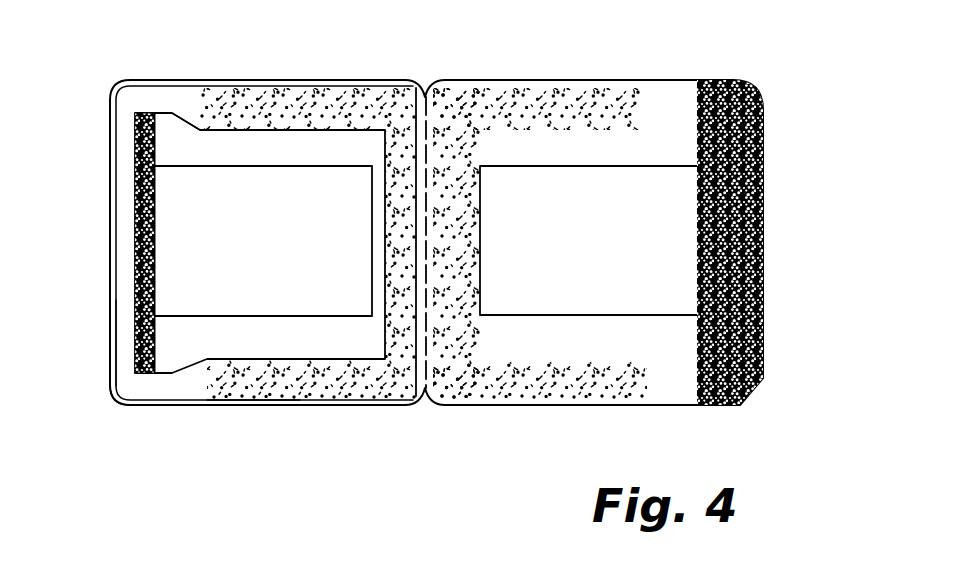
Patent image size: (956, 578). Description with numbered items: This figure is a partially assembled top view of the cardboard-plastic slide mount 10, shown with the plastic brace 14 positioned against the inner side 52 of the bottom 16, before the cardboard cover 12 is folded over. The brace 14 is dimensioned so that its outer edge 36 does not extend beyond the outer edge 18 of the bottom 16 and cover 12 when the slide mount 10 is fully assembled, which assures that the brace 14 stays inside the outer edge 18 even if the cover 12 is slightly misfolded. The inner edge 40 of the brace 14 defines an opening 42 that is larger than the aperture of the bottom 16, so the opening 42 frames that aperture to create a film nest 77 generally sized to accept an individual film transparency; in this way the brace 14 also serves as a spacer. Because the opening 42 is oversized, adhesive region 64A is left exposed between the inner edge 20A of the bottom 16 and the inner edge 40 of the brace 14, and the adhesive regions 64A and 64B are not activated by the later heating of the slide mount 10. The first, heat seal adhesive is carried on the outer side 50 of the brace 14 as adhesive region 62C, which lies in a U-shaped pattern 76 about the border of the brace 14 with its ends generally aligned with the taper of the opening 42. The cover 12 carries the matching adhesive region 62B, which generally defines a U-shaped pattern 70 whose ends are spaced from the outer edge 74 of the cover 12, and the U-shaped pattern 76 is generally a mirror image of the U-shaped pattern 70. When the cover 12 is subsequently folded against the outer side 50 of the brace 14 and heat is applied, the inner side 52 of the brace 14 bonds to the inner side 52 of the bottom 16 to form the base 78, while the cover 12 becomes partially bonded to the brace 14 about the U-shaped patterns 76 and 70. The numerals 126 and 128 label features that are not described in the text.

The slide mount 10 is at (790, 139).
The cover 12 is at (543, 80).
The brace 14 is at (117, 338).
The bottom 16 is at (297, 80).
The outer edge 18 is at (160, 79).
The inner edge 20A is at (157, 252).
The outer edge 36 is at (115, 149).
The inner edge 40 is at (135, 193).
The opening 42 is at (163, 112).
The outer side 50 is at (196, 383).
The inner side 52 is at (597, 147).
The adhesive region 62B is at (512, 401).
The adhesive region 62C is at (293, 390).
The adhesive region 64A is at (135, 286).
The adhesive region 64B is at (763, 360).
The U-shaped pattern 70 is at (573, 87).
The outer edge 74 is at (763, 240).
The U-shaped pattern 76 is at (318, 395).
The film nest 77 is at (337, 143).
The base 78 is at (137, 407).
The upper foam layer 126 is at (187, 97).
The first cavity 128 is at (228, 153).